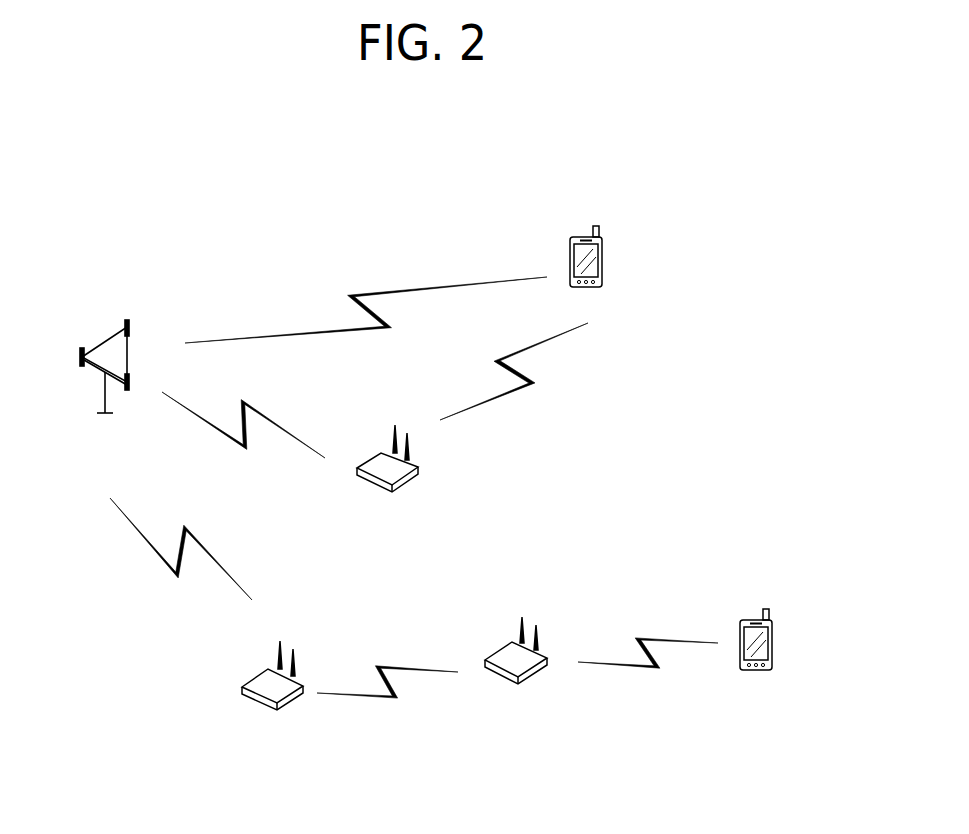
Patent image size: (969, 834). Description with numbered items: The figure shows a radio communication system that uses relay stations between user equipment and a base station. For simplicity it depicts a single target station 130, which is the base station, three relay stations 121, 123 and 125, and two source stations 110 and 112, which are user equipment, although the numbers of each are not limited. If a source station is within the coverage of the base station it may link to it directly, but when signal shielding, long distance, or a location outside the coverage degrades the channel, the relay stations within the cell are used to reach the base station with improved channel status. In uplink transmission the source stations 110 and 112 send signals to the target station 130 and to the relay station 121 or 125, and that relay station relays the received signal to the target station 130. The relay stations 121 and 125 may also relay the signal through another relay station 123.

The source station 110 is at (602, 243).
The source station 112 is at (792, 617).
The relay station 121 is at (377, 455).
The relay station 123 is at (267, 670).
The relay station 125 is at (503, 645).
The target station 130 is at (120, 330).